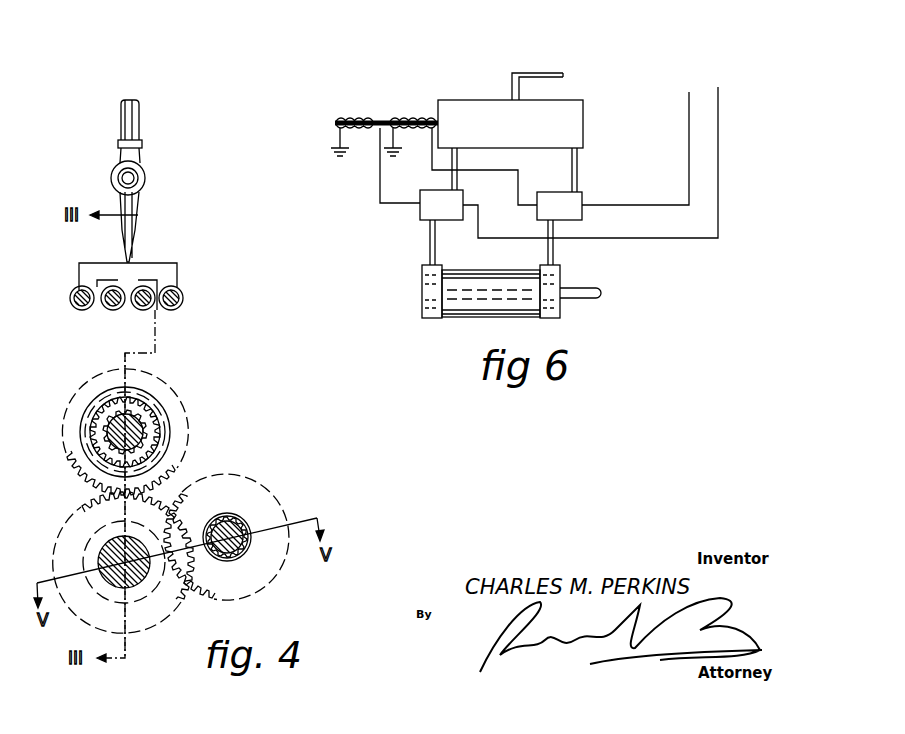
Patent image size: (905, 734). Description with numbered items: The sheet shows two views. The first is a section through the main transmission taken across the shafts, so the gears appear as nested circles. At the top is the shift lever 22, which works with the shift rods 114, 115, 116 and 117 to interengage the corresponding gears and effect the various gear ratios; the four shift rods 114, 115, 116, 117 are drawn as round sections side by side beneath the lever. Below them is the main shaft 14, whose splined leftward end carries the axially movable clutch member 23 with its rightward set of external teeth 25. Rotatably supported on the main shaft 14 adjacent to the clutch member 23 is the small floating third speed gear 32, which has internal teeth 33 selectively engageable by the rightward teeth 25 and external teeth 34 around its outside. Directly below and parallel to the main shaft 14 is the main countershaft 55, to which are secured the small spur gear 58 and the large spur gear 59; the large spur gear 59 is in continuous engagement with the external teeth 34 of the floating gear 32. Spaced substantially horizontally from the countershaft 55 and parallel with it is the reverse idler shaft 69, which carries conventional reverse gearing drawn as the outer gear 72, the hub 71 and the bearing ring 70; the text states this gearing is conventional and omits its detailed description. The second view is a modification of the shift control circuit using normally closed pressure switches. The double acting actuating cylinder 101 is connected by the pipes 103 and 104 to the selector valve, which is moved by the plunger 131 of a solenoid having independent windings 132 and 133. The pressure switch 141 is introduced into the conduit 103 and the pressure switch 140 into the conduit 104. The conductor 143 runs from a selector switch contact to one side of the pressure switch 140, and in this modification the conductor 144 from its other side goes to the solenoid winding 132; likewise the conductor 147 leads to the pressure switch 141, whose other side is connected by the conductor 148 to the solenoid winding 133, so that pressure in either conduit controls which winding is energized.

In FIG. 4, the shift lever 22 is at (125, 207).
In FIG. 4, the shift rod 117 is at (72, 297).
In FIG. 4, the shift rod 116 is at (105, 307).
In FIG. 4, the shift rod 115 is at (133, 310).
In FIG. 4, the shift rod 114 is at (183, 307).
In FIG. 4, the small floating third speed gear 32 is at (75, 386).
In FIG. 4, the external teeth 34 is at (67, 453).
In FIG. 4, the clutch member 23 is at (155, 400).
In FIG. 4, the internal teeth 33 is at (90, 428).
In FIG. 4, the rightward external teeth 25 is at (160, 437).
In FIG. 4, the main shaft 14 is at (143, 423).
In FIG. 4, the main countershaft 55 is at (103, 543).
In FIG. 4, the small spur gear 58 is at (85, 555).
In FIG. 4, the large spur gear 59 is at (147, 608).
In FIG. 4, the idler gear 72 is at (237, 478).
In FIG. 4, the idler gear hub 71 is at (247, 555).
In FIG. 4, the bearing ring 70 is at (237, 517).
In FIG. 4, the reverse idler shaft 69 is at (218, 520).
In FIG. 6, the plunger 131 is at (335, 123).
In FIG. 6, the solenoid winding 133 is at (364, 117).
In FIG. 6, the solenoid winding 132 is at (412, 117).
In FIG. 6, the conductor 148 is at (378, 196).
In FIG. 6, the conductor 144 is at (500, 172).
In FIG. 6, the pressure switch 141 is at (418, 222).
In FIG. 6, the pressure switch 140 is at (583, 197).
In FIG. 6, the conductor 143 is at (688, 112).
In FIG. 6, the conductor 147 is at (718, 138).
In FIG. 6, the pipe 103 is at (428, 252).
In FIG. 6, the pipe 104 is at (553, 248).
In FIG. 6, the double acting actuating cylinder 101 is at (423, 300).